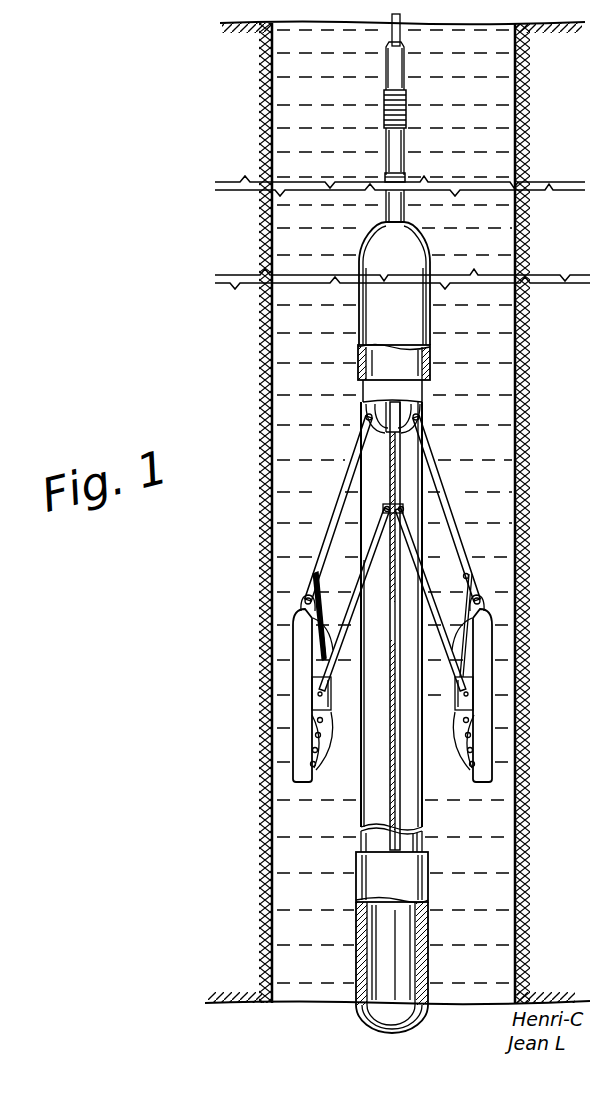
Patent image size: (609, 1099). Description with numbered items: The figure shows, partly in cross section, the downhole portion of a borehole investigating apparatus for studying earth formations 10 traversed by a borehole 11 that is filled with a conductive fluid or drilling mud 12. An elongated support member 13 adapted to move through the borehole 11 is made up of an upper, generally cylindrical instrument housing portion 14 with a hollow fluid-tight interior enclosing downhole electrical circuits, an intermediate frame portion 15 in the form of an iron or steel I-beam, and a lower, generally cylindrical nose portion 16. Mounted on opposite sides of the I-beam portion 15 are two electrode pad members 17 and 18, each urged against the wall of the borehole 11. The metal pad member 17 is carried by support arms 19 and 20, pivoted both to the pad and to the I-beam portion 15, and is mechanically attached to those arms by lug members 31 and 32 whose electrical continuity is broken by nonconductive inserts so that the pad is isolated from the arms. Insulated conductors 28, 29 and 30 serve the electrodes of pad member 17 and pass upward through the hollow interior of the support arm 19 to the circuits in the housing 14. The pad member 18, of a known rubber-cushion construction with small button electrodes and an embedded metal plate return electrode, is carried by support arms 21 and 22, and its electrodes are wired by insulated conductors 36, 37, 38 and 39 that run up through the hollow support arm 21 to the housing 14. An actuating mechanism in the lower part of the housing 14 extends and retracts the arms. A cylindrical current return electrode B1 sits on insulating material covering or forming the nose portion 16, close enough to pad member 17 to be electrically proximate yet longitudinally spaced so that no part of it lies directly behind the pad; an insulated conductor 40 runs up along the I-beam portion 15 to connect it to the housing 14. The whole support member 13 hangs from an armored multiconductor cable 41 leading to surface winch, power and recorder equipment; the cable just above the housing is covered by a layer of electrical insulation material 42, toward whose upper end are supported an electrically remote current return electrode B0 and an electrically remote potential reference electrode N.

The earth formations 10 is at (566, 361).
The borehole 11 is at (508, 378).
The drilling mud 12 is at (285, 358).
The support member 13 is at (430, 421).
The instrument housing portion 14 is at (397, 317).
The intermediate frame portion 15 is at (360, 812).
The nose portion 16 is at (356, 862).
The electrode pad member 17 is at (500, 767).
The electrode pad member 18 is at (288, 667).
The support arm 19 is at (457, 529).
The support arm 20 is at (430, 584).
The support arm 21 is at (340, 490).
The support arm 22 is at (358, 580).
The insulated conductor 28 is at (470, 732).
The insulated conductor 29 is at (470, 745).
The insulated conductor 30 is at (470, 760).
The lug member 31 is at (477, 598).
The lug member 32 is at (463, 695).
The insulated conductor 36 is at (323, 722).
The insulated conductor 37 is at (322, 736).
The insulated conductor 38 is at (320, 753).
The insulated conductor 39 is at (322, 630).
The insulated conductor 40 is at (398, 683).
The armored multiconductor cable 41 is at (400, 30).
The layer of electrical insulation material 42 is at (390, 75).
The electrically-remote current-return electrode B0 is at (385, 117).
The current return electrode B1 is at (356, 950).
The electrically-remote potential reference electrode N is at (385, 175).